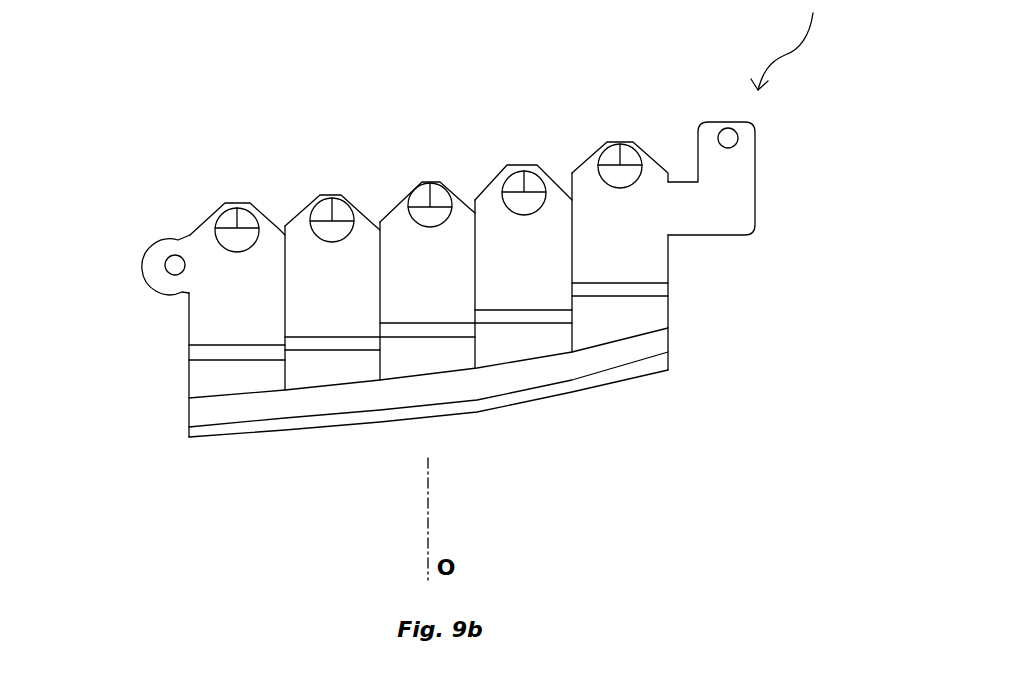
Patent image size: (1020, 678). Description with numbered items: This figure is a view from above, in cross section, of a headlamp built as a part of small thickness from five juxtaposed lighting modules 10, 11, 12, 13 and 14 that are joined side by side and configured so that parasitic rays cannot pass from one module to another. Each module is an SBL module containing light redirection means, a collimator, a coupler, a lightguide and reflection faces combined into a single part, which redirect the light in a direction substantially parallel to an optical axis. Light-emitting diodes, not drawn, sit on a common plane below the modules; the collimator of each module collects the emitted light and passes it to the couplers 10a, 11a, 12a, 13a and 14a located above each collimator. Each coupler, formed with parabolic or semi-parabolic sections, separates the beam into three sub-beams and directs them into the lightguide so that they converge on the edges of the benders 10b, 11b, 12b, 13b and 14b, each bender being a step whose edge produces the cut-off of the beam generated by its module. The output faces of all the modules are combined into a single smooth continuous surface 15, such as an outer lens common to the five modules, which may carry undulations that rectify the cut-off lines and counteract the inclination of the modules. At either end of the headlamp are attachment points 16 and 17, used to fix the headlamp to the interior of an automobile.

The lighting module 10 is at (243, 203).
The coupler 10a is at (229, 220).
The bender 10b is at (232, 352).
The lighting module 11 is at (340, 195).
The coupler 11a is at (322, 212).
The bender 11b is at (327, 347).
The lighting module 12 is at (436, 182).
The coupler 12a is at (422, 200).
The bender 12b is at (432, 333).
The lighting module 13 is at (530, 166).
The coupler 13a is at (518, 183).
The bender 13b is at (527, 315).
The lighting module 14 is at (628, 142).
The coupler 14a is at (612, 158).
The bender 14b is at (627, 290).
The smooth continuous surface 15 is at (657, 358).
The attachment point 16 is at (158, 267).
The attachment point 17 is at (730, 167).